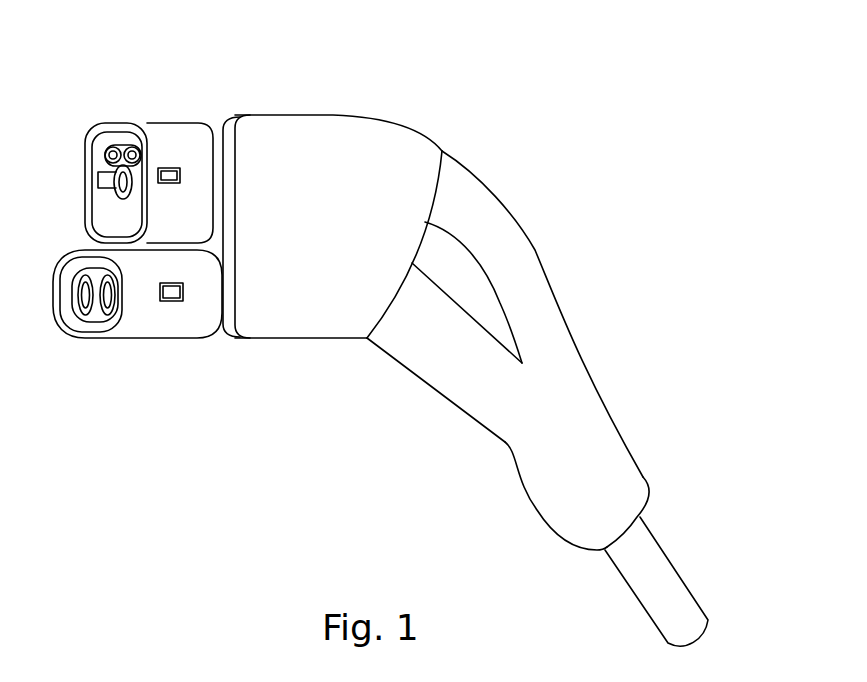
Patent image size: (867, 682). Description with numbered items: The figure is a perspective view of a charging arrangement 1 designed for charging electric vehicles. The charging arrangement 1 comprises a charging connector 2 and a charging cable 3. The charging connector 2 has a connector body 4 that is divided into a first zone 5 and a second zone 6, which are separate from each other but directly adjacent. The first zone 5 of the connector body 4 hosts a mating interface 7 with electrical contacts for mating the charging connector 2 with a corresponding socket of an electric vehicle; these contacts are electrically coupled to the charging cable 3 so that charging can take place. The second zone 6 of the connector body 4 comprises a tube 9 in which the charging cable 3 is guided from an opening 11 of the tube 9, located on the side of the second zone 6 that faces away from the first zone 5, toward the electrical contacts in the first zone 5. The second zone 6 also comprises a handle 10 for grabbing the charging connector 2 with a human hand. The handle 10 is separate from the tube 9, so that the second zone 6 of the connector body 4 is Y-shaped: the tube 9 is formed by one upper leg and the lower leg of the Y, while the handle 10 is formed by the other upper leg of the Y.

The charging arrangement 1 is at (608, 114).
The charging connector 2 is at (375, 402).
The charging cable 3 is at (670, 583).
The connector body 4 is at (413, 163).
The first zone 5 is at (306, 141).
The second zone 6 is at (499, 414).
The mating interface 7 is at (142, 321).
The tube 9 is at (460, 375).
The handle 10 is at (513, 259).
The opening 11 is at (630, 498).